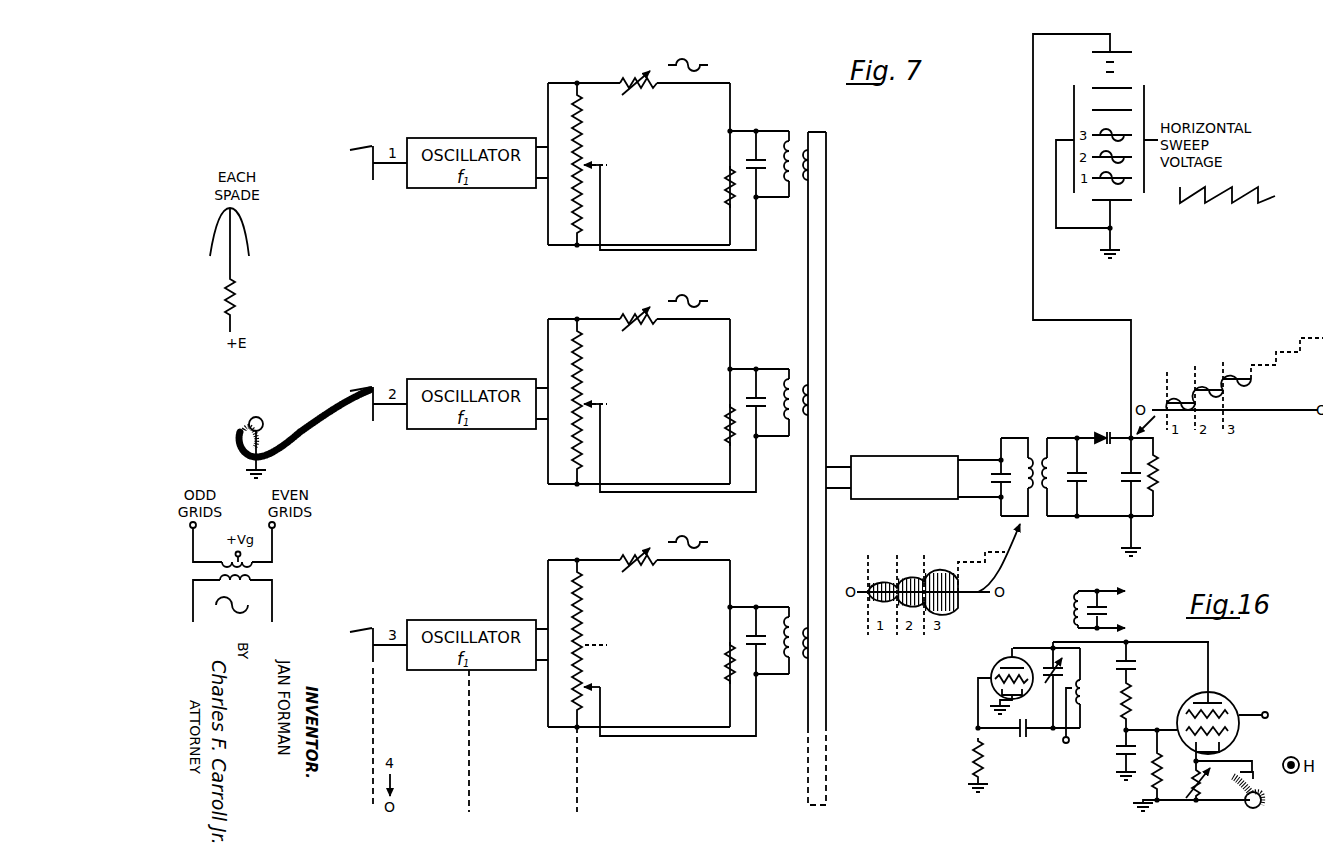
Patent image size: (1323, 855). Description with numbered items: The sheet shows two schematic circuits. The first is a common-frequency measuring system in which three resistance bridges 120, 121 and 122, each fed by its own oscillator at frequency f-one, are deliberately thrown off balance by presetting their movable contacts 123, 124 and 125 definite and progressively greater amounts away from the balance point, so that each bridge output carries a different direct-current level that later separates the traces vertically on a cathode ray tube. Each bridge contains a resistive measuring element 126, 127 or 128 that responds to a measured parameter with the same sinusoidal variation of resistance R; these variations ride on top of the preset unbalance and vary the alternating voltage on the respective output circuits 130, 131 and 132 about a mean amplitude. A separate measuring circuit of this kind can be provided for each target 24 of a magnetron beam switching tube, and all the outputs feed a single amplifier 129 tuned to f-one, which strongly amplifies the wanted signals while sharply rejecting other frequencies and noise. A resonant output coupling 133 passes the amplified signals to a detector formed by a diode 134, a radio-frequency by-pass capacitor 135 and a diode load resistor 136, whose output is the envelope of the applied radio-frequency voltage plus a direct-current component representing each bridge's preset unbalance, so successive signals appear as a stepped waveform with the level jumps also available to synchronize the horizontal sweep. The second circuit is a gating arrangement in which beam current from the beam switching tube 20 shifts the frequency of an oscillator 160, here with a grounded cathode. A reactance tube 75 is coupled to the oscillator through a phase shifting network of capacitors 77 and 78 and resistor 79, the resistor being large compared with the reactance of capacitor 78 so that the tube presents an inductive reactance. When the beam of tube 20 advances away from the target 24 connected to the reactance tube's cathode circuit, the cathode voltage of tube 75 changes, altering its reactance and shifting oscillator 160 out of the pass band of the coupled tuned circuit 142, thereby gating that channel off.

In FIG. 7, the target 24 is at (370, 176).
In FIG. 16, the target 24 is at (1261, 772).
In FIG. 7, the bridge 120 is at (668, 151).
In FIG. 7, the bridge 121 is at (668, 390).
In FIG. 7, the bridge 122 is at (668, 633).
In FIG. 7, the movable contact 123 is at (603, 173).
In FIG. 7, the movable contact 124 is at (603, 412).
In FIG. 7, the movable contact 125 is at (687, 705).
In FIG. 7, the resistive measuring element 126 is at (630, 74).
In FIG. 7, the resistive measuring element 127 is at (630, 310).
In FIG. 7, the resistive measuring element 128 is at (630, 551).
In FIG. 7, the amplifier 129 is at (944, 446).
In FIG. 7, the output circuit 130 is at (812, 167).
In FIG. 7, the output circuit 131 is at (812, 402).
In FIG. 7, the output circuit 132 is at (812, 645).
In FIG. 7, the resonant output coupling 133 is at (1039, 446).
In FIG. 7, the diode 134 is at (1103, 430).
In FIG. 7, the radio frequency by-pass capacitor 135 is at (1121, 480).
In FIG. 7, the diode load resistor 136 is at (1158, 507).
In FIG. 16, the tuned circuit 142 is at (1088, 590).
In FIG. 16, the oscillator 160 is at (1025, 641).
In FIG. 16, the capacitor 77 is at (1132, 669).
In FIG. 16, the capacitor 78 is at (1120, 757).
In FIG. 16, the resistor 79 is at (1121, 703).
In FIG. 16, the reactance tube 75 is at (1190, 708).
In FIG. 16, the magnetron beam switching tube 20 is at (1310, 802).